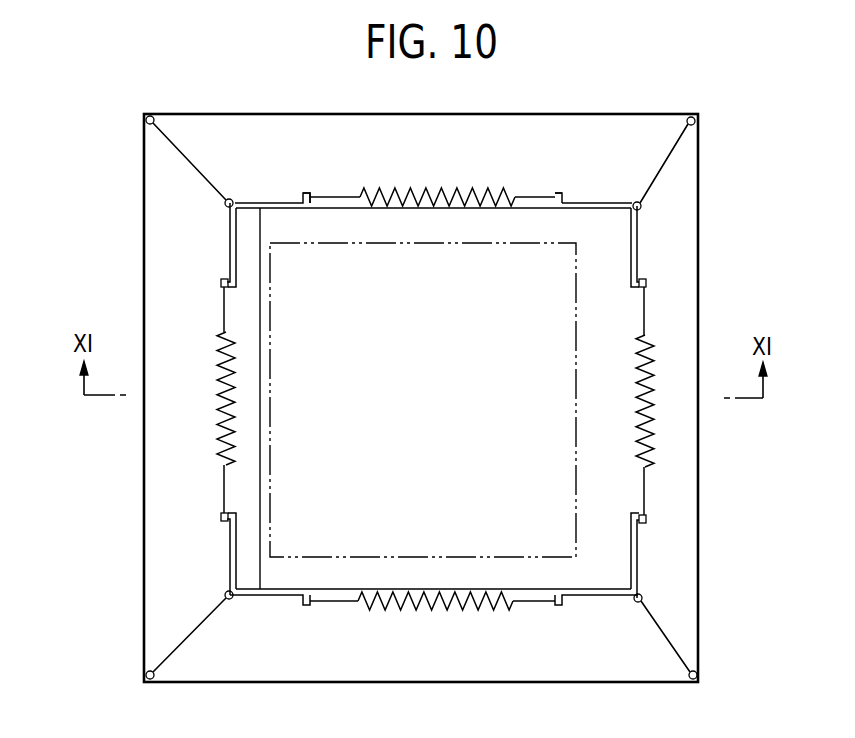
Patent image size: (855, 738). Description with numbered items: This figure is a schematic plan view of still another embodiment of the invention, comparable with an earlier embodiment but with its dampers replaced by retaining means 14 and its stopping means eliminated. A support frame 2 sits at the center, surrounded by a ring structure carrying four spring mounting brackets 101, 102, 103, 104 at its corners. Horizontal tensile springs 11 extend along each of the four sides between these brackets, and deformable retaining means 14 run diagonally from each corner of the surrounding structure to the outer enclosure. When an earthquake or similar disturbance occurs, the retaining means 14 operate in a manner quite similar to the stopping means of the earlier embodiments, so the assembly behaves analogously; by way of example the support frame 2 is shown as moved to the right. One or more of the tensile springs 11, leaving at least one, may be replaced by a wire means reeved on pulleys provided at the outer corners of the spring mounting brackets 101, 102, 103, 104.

The support frame 2 is at (436, 400).
The tensile spring 11 is at (432, 188).
The retaining means 14 is at (188, 153).
The spring mounting bracket 101 is at (638, 560).
The spring mounting bracket 102 is at (640, 254).
The spring mounting bracket 103 is at (230, 240).
The spring mounting bracket 104 is at (230, 560).